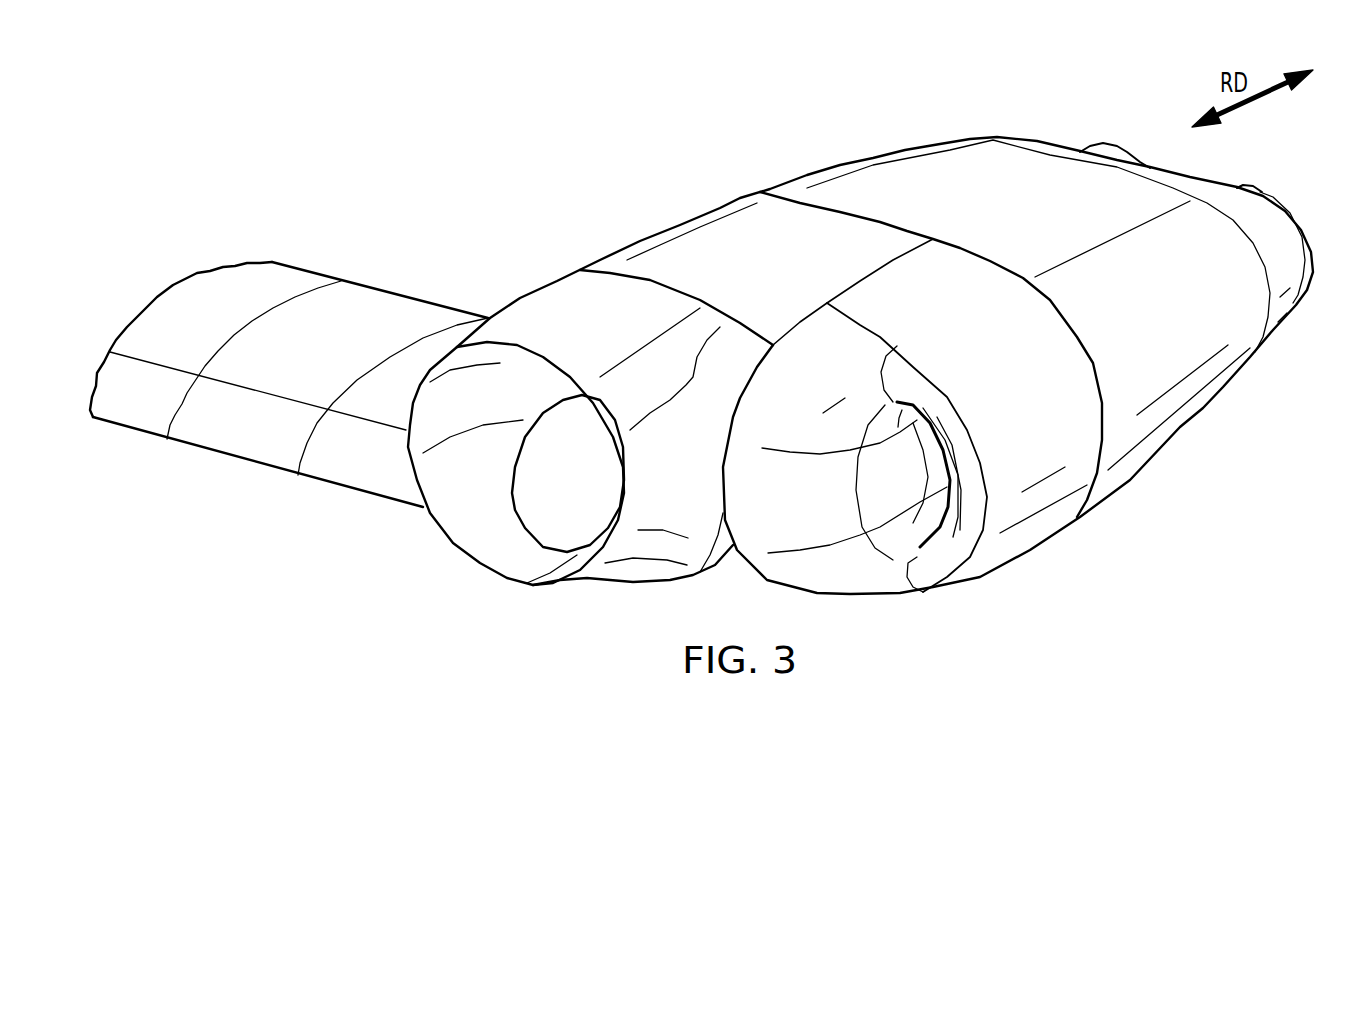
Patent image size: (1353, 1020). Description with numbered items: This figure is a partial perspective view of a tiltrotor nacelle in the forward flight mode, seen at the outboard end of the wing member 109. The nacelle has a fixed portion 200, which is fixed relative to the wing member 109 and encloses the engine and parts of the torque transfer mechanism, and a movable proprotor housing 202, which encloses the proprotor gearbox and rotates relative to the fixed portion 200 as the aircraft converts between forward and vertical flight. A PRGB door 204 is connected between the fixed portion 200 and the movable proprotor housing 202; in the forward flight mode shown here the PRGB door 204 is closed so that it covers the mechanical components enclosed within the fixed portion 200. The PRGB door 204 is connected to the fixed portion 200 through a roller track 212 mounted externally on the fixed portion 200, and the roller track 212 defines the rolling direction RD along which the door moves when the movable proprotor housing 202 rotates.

The wing member 109 is at (289, 370).
The fixed portion 200 is at (885, 365).
The movable proprotor housing 202 is at (520, 493).
The PRGB door 204 is at (676, 297).
The roller track 212 is at (1032, 307).